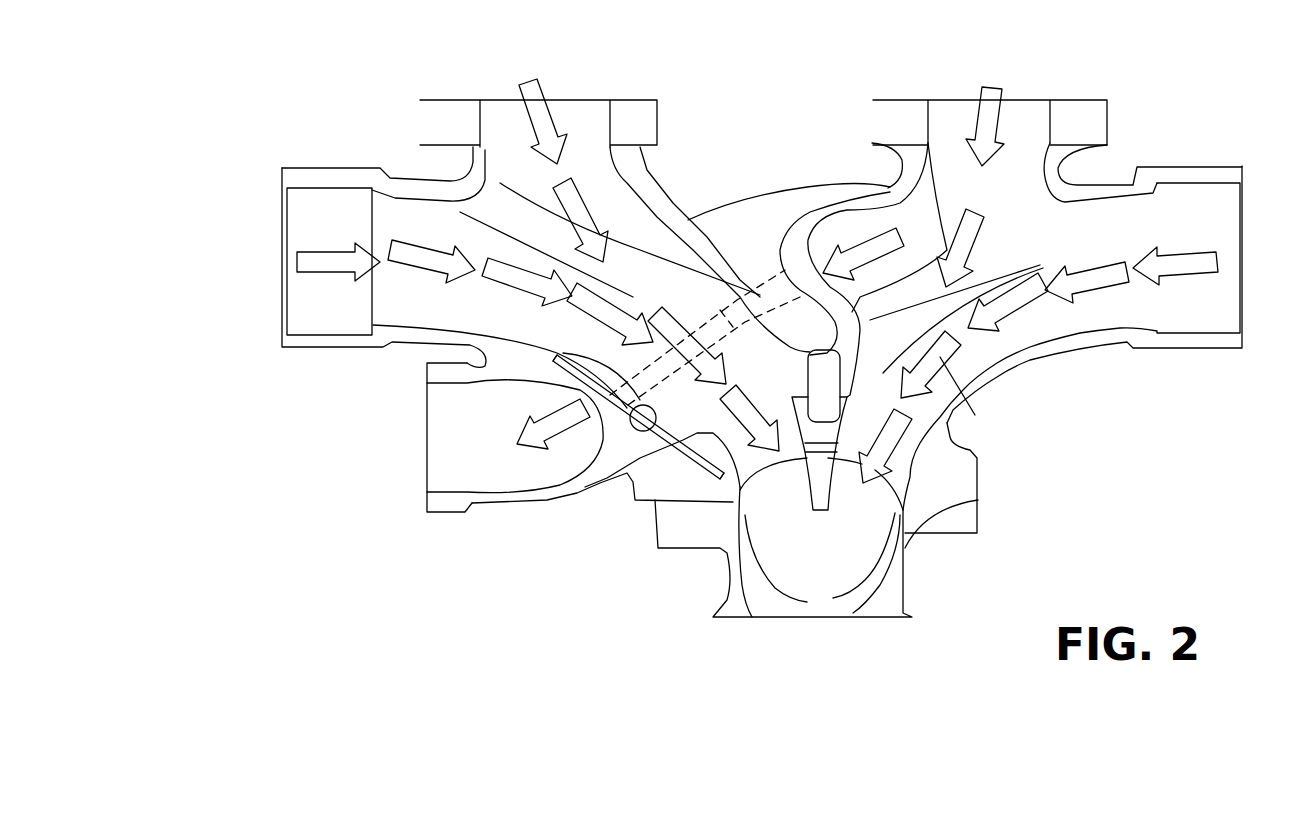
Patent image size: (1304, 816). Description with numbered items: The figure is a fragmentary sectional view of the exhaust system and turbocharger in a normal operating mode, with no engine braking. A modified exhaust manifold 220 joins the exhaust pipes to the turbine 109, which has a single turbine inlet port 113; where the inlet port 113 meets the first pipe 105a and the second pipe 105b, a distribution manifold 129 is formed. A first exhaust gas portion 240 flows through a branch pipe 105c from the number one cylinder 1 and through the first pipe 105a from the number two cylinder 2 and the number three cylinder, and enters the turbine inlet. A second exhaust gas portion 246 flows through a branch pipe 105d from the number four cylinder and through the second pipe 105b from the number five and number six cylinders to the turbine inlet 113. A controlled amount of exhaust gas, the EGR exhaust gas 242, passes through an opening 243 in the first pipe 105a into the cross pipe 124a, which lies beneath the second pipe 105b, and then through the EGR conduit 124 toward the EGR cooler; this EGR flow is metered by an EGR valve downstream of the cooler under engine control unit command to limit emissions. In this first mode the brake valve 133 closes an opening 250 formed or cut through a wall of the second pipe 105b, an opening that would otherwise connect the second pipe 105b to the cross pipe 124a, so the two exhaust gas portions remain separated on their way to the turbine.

The branch pipe 105d is at (658, 107).
The second pipe 105b is at (765, 305).
The branch pipe 105c is at (1075, 100).
The first pipe 105a is at (1092, 348).
The EGR conduit 124 is at (455, 515).
The cross pipe 124a is at (750, 200).
The distribution manifold 129 is at (1122, 150).
The EGR exhaust gas 242 is at (875, 252).
The opening 243 is at (930, 215).
The modified exhaust manifold 220 is at (832, 183).
The second exhaust gas portion 246 is at (605, 335).
The first exhaust gas portion 240 is at (975, 415).
The turbine inlet port 113 is at (978, 500).
The turbine 109 is at (900, 628).
The brake valve 133 is at (630, 434).
The opening 250 is at (672, 407).
The cylinder 1 is at (552, 359).
The cylinder 2 is at (729, 460).